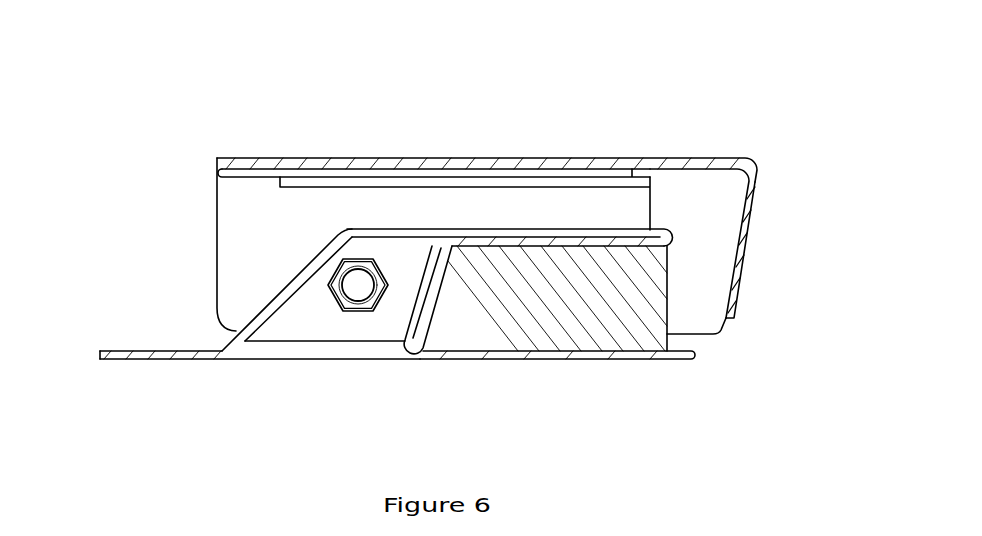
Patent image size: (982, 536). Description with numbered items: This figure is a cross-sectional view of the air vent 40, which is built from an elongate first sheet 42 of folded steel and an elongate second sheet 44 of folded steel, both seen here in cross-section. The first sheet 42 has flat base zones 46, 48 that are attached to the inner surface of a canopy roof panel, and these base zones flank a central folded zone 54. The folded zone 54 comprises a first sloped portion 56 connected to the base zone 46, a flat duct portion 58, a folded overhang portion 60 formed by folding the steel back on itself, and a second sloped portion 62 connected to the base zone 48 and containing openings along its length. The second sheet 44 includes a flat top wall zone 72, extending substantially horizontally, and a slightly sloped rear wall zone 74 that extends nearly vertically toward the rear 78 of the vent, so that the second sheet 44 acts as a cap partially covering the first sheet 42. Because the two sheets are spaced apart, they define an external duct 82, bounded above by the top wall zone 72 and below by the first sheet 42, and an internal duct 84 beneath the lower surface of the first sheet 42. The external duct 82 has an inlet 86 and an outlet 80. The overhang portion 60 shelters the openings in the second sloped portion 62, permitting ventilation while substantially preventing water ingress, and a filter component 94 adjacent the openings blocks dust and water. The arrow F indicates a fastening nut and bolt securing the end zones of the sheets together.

The air vent 40 is at (118, 82).
The first sheet 42 is at (99, 325).
The second sheet 44 is at (332, 120).
The flat base zone 46 is at (190, 372).
The flat base zone 48 is at (457, 372).
The central folded zone 54 is at (407, 262).
The first sloped portion 56 is at (258, 313).
The flat duct portion 58 is at (393, 237).
The folded overhang portion 60 is at (646, 236).
The second sloped portion 62 is at (410, 312).
The flat top wall zone 72 is at (585, 161).
The sloped rear wall zone 74 is at (743, 240).
The rear 78 is at (776, 277).
The outlet 80 is at (716, 355).
The external duct 82 is at (261, 211).
The internal duct 84 is at (337, 338).
The inlet 86 is at (116, 229).
The filter component 94 is at (544, 318).
The fastening nuts and bolts F is at (325, 310).